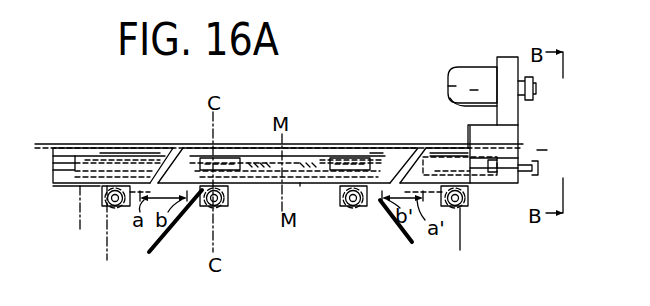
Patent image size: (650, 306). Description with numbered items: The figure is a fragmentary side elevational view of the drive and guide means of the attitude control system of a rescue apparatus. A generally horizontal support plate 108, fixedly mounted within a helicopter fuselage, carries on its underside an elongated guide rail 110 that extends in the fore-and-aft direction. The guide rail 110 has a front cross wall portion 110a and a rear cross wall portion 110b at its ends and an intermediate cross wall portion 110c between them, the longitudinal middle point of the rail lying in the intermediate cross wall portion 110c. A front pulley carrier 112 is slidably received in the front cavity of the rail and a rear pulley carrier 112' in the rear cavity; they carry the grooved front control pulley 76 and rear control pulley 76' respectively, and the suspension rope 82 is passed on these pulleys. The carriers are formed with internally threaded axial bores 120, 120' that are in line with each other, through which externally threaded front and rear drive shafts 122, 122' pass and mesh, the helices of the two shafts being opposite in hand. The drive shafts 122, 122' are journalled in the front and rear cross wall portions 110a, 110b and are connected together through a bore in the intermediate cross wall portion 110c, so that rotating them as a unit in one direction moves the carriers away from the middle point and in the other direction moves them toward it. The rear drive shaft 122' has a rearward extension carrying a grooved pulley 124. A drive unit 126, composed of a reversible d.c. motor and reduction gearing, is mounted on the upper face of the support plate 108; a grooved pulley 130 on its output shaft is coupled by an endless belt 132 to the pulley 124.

The support plate 108 is at (68, 145).
The guide rail 110 is at (72, 192).
The front cross wall portion 110a is at (72, 221).
The rear cross wall portion 110b is at (495, 184).
The intermediate cross wall portion 110c is at (303, 199).
The front pulley carrier 112 is at (182, 172).
The rear pulley carrier 112' is at (381, 123).
The internally threaded axial bore 120 is at (235, 141).
The internally threaded axial bore 120' is at (343, 141).
The front drive shaft 122 is at (133, 132).
The rear drive shaft 122' is at (419, 130).
The grooved pulley 124 is at (540, 172).
The drive unit 126 is at (477, 60).
The grooved pulley 130 is at (529, 97).
The endless belt 132 is at (527, 133).
The front control pulley 76 is at (184, 227).
The rear control pulley 76' is at (404, 234).
The suspension rope 82 is at (164, 248).